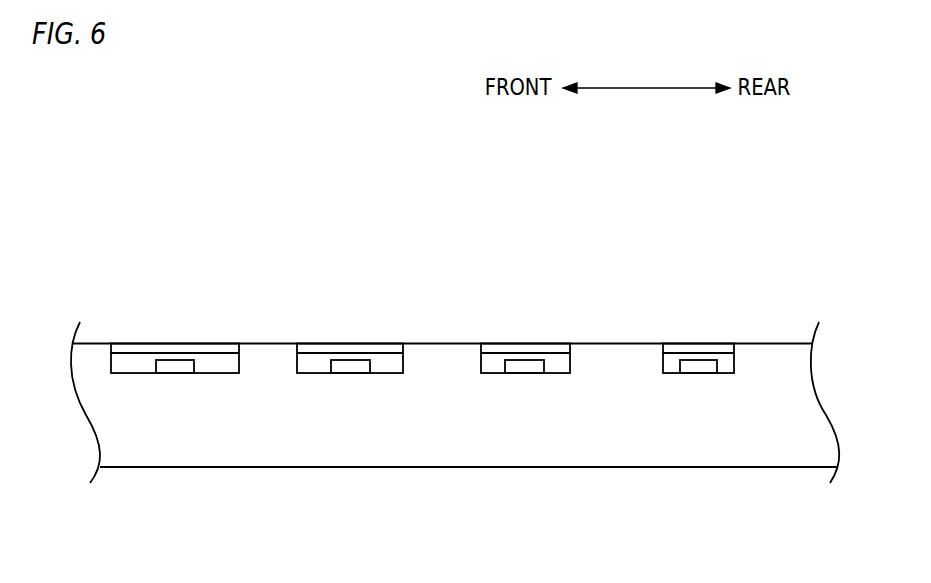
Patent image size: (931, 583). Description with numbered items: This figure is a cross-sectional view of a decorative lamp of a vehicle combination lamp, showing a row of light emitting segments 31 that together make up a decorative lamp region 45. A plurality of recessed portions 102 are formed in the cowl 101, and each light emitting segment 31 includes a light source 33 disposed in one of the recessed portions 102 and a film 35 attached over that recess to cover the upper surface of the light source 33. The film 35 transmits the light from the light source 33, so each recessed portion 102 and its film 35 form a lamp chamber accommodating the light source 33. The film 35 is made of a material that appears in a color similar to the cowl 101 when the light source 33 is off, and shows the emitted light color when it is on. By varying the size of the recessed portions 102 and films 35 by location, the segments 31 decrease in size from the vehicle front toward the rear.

The cowl 101 is at (503, 443).
The recessed portion 102 is at (237, 362).
The light emitting segment 31 is at (413, 278).
The decorative lamp region 45 is at (413, 278).
The light source 33 is at (170, 364).
The film 35 is at (178, 353).